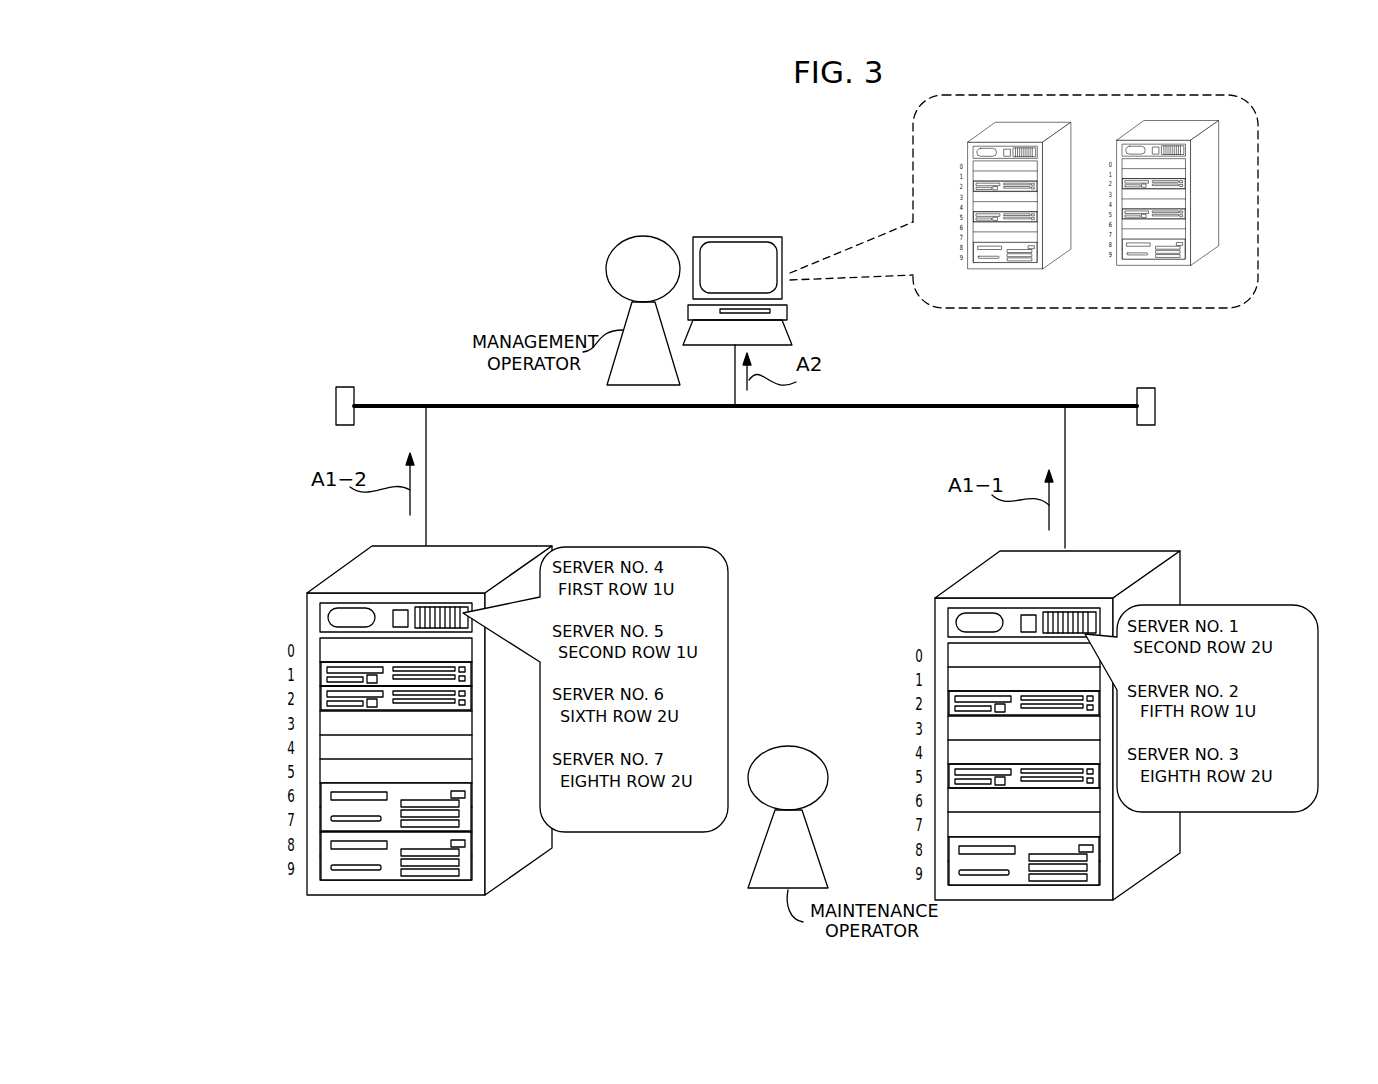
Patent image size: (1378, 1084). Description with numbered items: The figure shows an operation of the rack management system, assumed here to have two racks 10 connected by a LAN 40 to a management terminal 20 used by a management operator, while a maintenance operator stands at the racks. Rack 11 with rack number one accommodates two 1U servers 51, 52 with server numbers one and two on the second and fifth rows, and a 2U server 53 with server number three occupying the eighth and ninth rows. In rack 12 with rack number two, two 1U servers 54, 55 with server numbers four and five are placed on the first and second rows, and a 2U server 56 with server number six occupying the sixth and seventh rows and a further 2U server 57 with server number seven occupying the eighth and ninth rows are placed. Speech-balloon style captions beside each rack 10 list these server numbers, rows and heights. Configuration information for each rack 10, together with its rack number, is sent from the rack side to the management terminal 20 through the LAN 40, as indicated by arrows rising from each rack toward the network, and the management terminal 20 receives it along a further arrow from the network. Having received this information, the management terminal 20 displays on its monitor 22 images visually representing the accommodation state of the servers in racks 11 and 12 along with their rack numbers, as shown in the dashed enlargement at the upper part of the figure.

The rack 10 is at (723, 718).
The rack 11 is at (1040, 710).
The rack 12 is at (409, 718).
The management terminal 20 is at (1017, 220).
The monitor 22 is at (742, 240).
The LAN 40 is at (893, 400).
The 1U server 51 is at (950, 713).
The 1U server 52 is at (1095, 782).
The 2U server 53 is at (1093, 857).
The 1U server 54 is at (320, 687).
The 1U server 55 is at (320, 705).
The 2U server 56 is at (463, 812).
The 2U server 57 is at (463, 858).